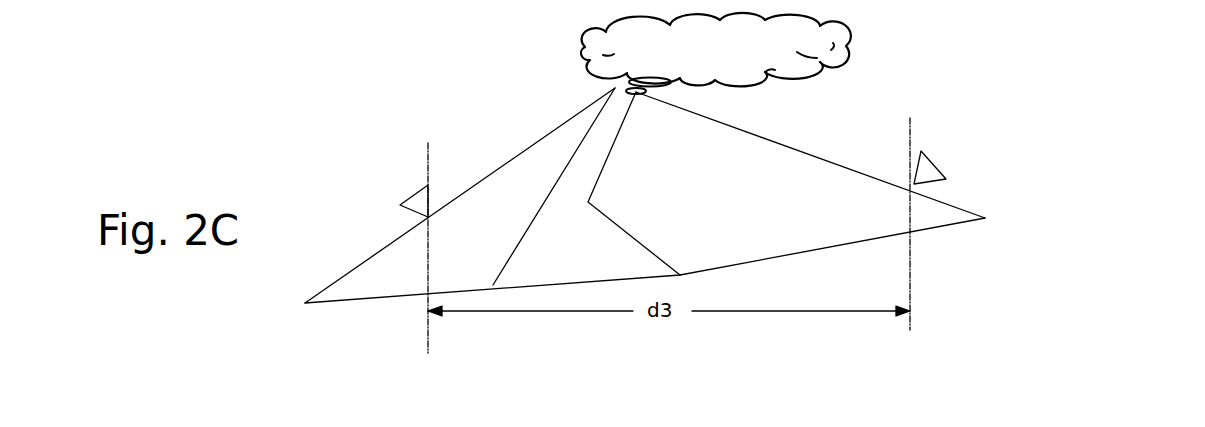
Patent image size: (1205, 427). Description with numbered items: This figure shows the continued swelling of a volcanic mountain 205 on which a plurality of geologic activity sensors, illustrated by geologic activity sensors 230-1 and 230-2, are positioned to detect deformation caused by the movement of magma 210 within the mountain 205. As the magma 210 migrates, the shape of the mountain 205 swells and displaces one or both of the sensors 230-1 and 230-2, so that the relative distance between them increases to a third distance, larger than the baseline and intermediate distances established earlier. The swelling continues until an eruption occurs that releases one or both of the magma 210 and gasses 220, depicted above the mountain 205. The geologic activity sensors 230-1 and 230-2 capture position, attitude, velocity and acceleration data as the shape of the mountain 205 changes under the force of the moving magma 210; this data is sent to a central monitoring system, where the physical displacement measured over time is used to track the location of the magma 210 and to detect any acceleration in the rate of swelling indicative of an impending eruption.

The gasses 220 is at (847, 50).
The magma 210 is at (597, 158).
The volcanic mountain 205 is at (1044, 206).
The geologic activity sensor 230-1 is at (413, 192).
The geologic activity sensor 230-2 is at (938, 172).